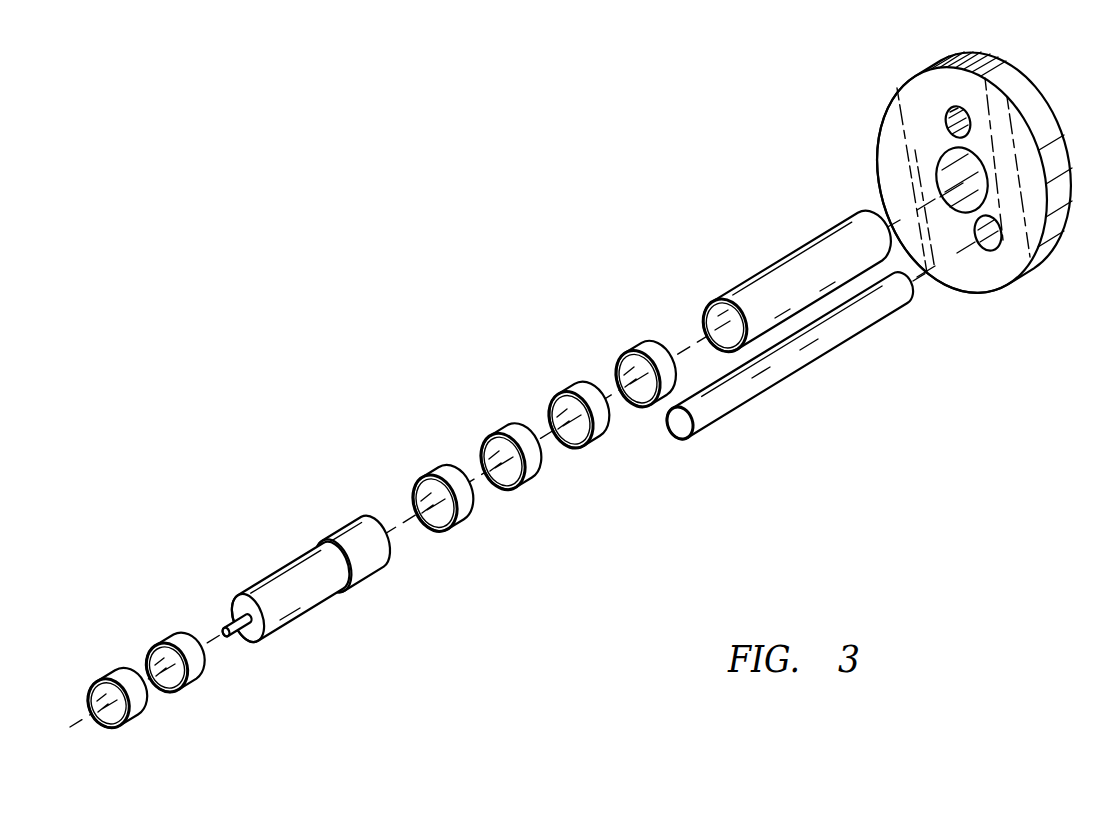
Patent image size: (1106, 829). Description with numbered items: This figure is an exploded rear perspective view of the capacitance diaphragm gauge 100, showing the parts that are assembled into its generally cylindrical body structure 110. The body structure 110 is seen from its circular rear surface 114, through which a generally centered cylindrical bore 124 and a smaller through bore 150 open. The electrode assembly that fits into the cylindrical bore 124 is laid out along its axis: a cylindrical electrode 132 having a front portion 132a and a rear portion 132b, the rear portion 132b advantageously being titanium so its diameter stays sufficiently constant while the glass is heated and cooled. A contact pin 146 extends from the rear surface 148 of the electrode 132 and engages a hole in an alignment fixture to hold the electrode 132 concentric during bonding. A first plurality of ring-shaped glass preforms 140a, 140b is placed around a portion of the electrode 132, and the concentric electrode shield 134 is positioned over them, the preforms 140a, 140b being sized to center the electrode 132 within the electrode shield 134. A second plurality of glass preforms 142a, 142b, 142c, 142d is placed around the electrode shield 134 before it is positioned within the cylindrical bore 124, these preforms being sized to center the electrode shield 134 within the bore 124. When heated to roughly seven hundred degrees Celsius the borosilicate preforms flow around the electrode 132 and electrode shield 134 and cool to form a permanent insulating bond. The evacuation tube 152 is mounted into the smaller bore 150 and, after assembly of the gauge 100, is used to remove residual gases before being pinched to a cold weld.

The capacitance diaphragm gauge 100 is at (748, 143).
The body structure 110 is at (947, 187).
The rear surface 114 is at (912, 127).
The cylindrical bore 124 is at (950, 209).
The through bore 150 is at (990, 248).
The electrode shield 134 is at (820, 250).
The evacuation tube 152 is at (728, 400).
The glass preform 142a is at (425, 474).
The glass preform 142b is at (490, 432).
The glass preform 142c is at (560, 390).
The glass preform 142d is at (639, 346).
The electrode 132 is at (320, 595).
The front portion 132a is at (367, 575).
The rear portion 132b is at (288, 595).
The contact pin 146 is at (234, 608).
The rear surface 148 is at (251, 640).
The glass preform 140a is at (144, 712).
The glass preform 140b is at (168, 641).